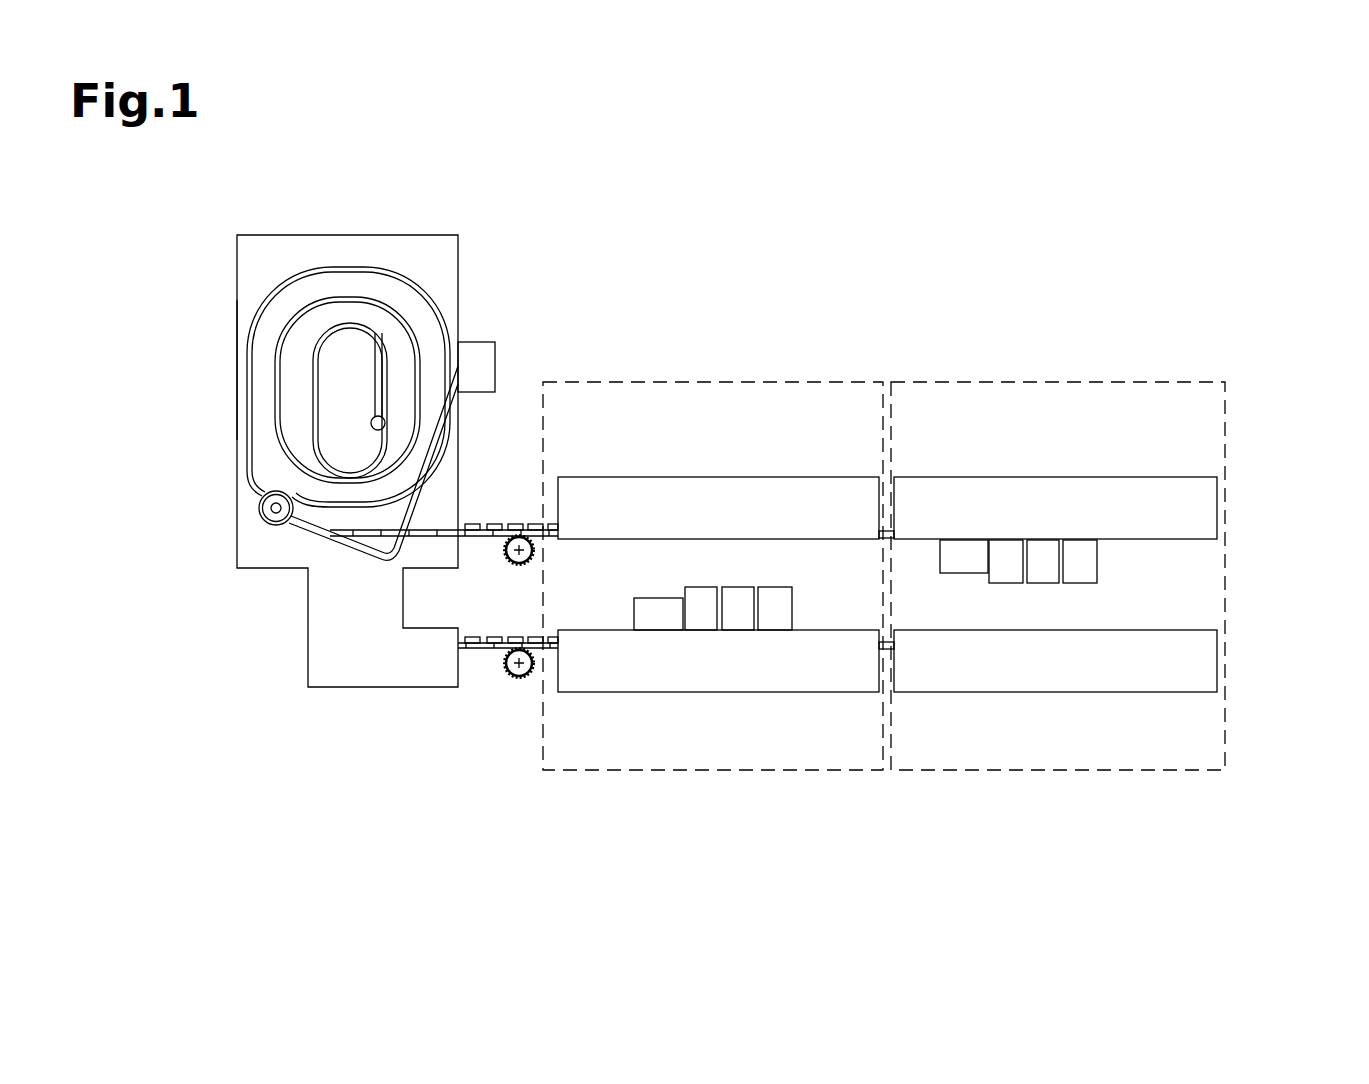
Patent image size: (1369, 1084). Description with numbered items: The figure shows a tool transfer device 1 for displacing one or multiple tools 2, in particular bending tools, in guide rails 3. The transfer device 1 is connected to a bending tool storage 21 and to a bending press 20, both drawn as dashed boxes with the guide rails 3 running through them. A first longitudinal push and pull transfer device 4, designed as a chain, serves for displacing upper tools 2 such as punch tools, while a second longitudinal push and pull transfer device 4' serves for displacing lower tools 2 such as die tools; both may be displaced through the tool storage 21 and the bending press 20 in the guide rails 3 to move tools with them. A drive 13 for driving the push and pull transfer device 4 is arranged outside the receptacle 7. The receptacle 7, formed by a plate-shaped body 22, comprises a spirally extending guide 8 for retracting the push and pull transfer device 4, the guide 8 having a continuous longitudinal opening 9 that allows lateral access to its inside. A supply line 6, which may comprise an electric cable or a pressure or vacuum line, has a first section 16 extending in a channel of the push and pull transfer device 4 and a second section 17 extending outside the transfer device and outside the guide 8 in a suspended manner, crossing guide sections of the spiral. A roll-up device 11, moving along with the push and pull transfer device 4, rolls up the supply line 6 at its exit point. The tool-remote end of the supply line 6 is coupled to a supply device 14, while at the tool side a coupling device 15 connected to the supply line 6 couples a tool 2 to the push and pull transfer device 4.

The tool transfer device 1 is at (162, 290).
The tools 2 is at (1005, 583).
The guide rails 3 is at (617, 560).
The first longitudinal push and pull transfer device 4 is at (531, 400).
The second longitudinal push and pull transfer device 4' is at (478, 747).
The supply line 6 is at (328, 546).
The receptacle 7 is at (218, 248).
The spirally extending guide 8 is at (418, 285).
The longitudinal opening 9 is at (248, 425).
The roll-up device 11 is at (248, 520).
The drive 13 is at (540, 527).
The supply device 14 is at (466, 383).
The coupling device 15 is at (960, 573).
The first section 16 is at (477, 548).
The second section 17 is at (357, 560).
The bending press 20 is at (1005, 400).
The bending tool storage 21 is at (737, 413).
The plate-shaped body 22 is at (237, 362).